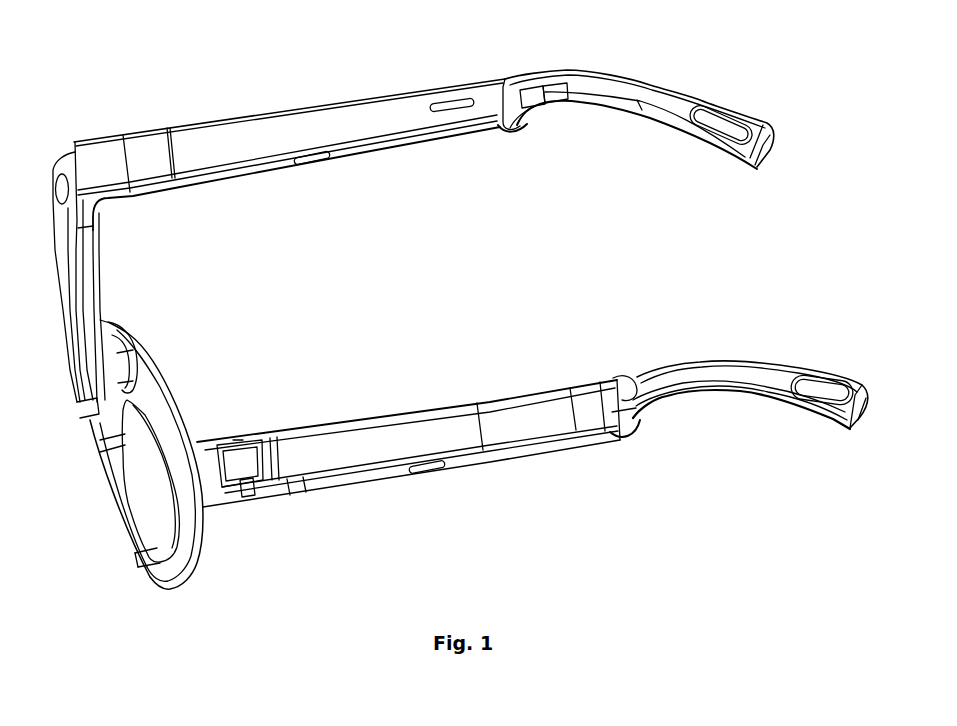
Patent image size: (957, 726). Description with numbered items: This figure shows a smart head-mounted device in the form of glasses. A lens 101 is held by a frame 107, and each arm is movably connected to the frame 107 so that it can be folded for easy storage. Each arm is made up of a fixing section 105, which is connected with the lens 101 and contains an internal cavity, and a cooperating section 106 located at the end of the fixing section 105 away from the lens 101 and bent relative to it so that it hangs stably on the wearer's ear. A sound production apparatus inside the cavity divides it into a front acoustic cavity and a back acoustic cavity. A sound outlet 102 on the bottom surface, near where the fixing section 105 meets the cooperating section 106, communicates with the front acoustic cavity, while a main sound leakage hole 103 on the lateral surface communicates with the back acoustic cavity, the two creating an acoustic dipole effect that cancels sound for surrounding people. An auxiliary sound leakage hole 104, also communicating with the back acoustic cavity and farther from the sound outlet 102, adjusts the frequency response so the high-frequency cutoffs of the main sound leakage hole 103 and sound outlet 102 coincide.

The lens 101 is at (150, 485).
The sound outlet 102 is at (503, 132).
The main sound leakage hole 103 is at (450, 109).
The auxiliary sound leakage hole 104 is at (432, 460).
The fixing section 105 is at (238, 137).
The cooperating section 106 is at (665, 96).
The frame 107 is at (142, 393).